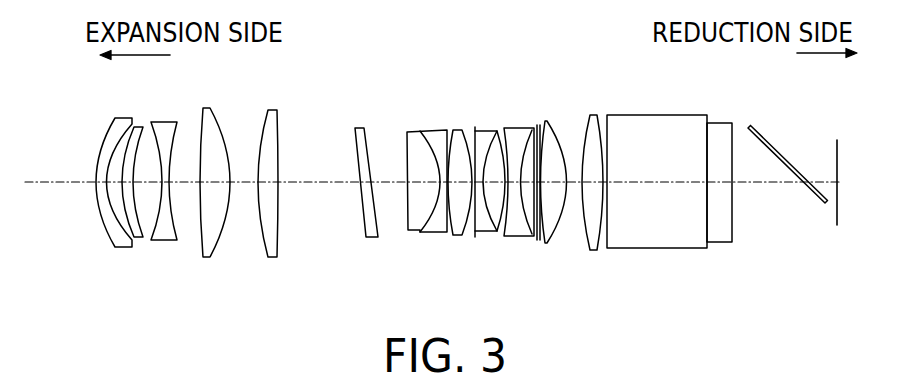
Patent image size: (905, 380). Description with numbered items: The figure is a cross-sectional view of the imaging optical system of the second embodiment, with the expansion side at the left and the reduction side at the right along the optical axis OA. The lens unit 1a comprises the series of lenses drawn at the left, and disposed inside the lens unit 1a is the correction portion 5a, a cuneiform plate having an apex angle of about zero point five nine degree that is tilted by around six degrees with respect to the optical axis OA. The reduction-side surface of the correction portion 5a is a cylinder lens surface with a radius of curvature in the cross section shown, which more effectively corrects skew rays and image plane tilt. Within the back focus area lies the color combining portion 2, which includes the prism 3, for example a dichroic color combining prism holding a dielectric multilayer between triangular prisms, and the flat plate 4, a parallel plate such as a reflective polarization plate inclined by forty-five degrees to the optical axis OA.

The lens unit 1a is at (605, 268).
The color combining portion 2 is at (835, 268).
The prism 3 is at (658, 132).
The flat plate 4 is at (767, 147).
The correction portion 5a is at (366, 132).
The optical axis OA is at (48, 183).